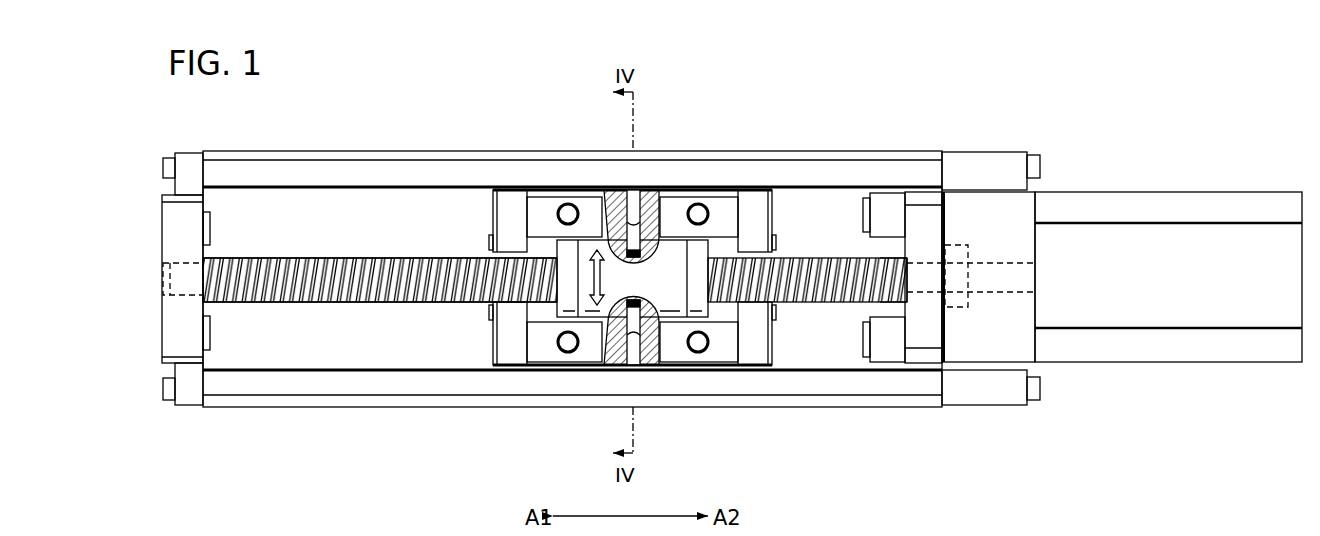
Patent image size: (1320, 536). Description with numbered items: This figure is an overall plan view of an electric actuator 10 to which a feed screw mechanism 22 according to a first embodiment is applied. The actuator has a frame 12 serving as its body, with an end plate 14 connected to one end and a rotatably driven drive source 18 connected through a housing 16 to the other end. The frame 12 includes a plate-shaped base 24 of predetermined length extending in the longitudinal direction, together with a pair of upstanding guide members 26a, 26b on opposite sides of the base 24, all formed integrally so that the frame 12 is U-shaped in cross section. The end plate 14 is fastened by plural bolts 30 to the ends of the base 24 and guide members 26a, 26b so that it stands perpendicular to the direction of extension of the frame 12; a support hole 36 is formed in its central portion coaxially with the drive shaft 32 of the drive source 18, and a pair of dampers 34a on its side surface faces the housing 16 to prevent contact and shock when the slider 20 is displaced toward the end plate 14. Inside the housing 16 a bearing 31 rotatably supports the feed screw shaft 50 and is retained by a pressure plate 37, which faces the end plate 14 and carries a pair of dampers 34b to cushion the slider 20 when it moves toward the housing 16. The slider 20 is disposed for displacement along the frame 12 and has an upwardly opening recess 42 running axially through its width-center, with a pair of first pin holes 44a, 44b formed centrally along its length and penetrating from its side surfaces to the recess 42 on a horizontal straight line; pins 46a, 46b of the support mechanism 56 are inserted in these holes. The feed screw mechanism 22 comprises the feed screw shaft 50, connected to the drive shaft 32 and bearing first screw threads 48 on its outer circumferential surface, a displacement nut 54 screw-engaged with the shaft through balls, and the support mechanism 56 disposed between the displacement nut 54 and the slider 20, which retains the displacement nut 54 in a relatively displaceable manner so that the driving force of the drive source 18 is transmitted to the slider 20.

The electric actuator 10 is at (925, 89).
The frame 12 is at (768, 147).
The end plate 14 is at (170, 326).
The housing 16 is at (1022, 240).
The drive source 18 is at (1131, 365).
The slider 20 is at (541, 210).
The feed screw mechanism 22 is at (388, 312).
The base 24 is at (325, 203).
The guide member 26a is at (245, 385).
The guide member 26b is at (246, 170).
The bolts 30 is at (168, 388).
The bearing 31 is at (955, 245).
The drive shaft 32 is at (867, 302).
The dampers 34a is at (212, 213).
The dampers 34b is at (863, 210).
The support hole 36 is at (160, 277).
The pressure plate 37 is at (922, 322).
The recess 42 is at (730, 310).
The first pin hole 44a is at (607, 370).
The first pin hole 44b is at (613, 188).
The pin 46a is at (636, 370).
The pin 46b is at (637, 188).
The first screw threads 48 is at (402, 258).
The feed screw shaft 50 is at (274, 304).
The displacement nut 54 is at (675, 253).
The support mechanism 56 is at (650, 377).